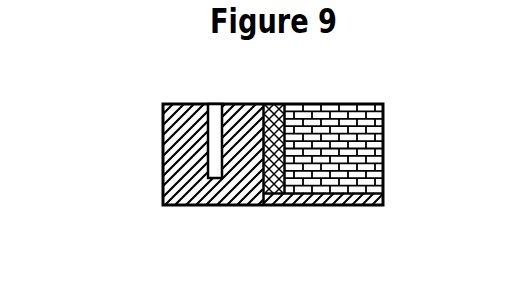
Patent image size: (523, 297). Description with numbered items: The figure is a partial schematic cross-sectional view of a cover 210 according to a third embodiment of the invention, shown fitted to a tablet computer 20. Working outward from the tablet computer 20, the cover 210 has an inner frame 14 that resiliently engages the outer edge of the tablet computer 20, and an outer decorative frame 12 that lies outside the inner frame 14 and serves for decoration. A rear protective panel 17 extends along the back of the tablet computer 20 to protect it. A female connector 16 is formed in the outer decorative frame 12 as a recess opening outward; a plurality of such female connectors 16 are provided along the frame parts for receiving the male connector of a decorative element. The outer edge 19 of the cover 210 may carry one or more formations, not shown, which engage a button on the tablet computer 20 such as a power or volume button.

The cover 210 is at (147, 168).
The outer decorative frame 12 is at (248, 104).
The inner frame 14 is at (283, 188).
The female connector 16 is at (213, 104).
The rear protective panel 17 is at (345, 205).
The outer edge 19 is at (163, 192).
The tablet computer 20 is at (338, 132).